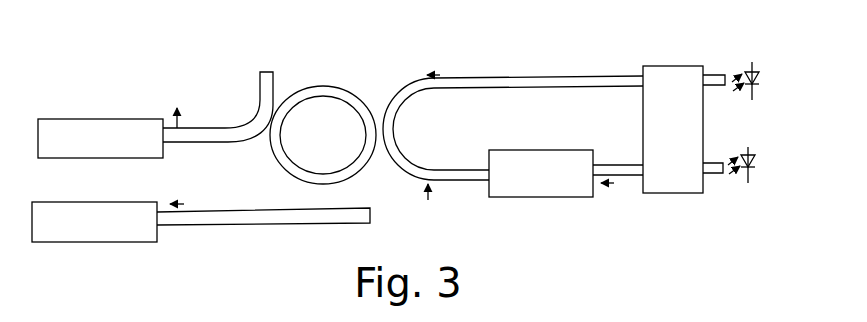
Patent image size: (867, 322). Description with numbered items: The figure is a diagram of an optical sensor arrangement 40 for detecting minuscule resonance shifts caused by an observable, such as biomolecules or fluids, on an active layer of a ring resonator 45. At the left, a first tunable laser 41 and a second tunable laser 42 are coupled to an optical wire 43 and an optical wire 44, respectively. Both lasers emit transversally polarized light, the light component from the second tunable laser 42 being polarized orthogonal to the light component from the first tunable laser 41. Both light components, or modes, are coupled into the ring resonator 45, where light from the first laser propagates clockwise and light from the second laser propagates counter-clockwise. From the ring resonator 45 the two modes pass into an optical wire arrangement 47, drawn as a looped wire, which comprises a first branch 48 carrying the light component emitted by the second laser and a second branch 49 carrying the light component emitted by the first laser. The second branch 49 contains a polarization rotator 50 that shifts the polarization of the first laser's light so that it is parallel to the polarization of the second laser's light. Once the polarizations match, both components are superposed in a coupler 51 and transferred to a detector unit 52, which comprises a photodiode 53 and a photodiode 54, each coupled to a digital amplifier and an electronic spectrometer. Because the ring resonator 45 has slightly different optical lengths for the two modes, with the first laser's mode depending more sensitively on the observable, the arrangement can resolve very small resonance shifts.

The optical sensor arrangement 40 is at (226, 65).
The first tunable laser 41 is at (110, 119).
The second tunable laser 42 is at (100, 202).
The optical wire 43 is at (200, 127).
The optical wire 44 is at (217, 212).
The ring resonator 45 is at (326, 86).
The optical wire arrangement 47 is at (528, 58).
The first branch 48 is at (575, 78).
The second branch 49 is at (473, 169).
The polarization rotator 50 is at (532, 150).
The coupler 51 is at (685, 66).
The detector unit 52 is at (752, 50).
The photodiode 53 is at (758, 87).
The photodiode 54 is at (755, 170).